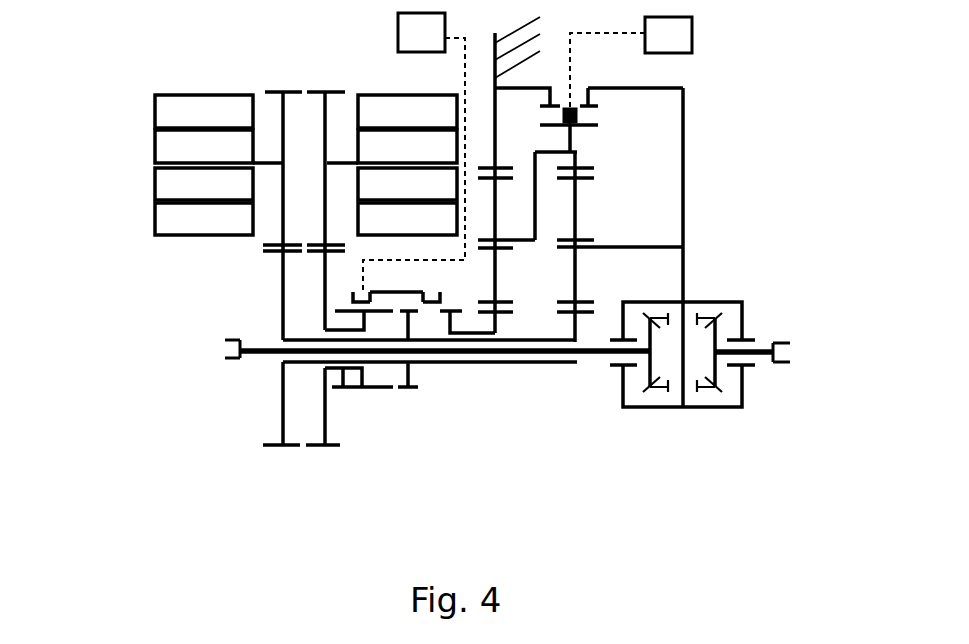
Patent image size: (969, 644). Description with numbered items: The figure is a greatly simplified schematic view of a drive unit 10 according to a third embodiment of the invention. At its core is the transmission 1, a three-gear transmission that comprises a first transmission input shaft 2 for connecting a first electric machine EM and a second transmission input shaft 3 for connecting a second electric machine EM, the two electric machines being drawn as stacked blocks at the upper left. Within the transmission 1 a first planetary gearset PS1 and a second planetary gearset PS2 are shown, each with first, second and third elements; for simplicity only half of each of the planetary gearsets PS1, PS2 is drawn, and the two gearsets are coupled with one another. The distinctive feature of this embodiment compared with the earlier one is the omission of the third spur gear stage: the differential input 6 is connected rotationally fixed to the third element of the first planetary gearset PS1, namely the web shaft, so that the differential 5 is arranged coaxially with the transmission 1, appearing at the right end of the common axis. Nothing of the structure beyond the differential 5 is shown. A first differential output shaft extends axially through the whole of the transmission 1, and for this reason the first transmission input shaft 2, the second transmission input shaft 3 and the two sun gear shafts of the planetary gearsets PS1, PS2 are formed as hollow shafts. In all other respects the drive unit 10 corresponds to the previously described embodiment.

The drive unit 10 is at (137, 47).
The transmission 1 is at (735, 165).
The electric machine EM is at (612, 238).
The first transmission input shaft 2 is at (305, 335).
The second transmission input shaft 3 is at (342, 392).
The second planetary gearset PS2 is at (492, 372).
The first planetary gearset PS1 is at (573, 372).
The differential input 6 is at (700, 302).
The differential 5 is at (747, 418).